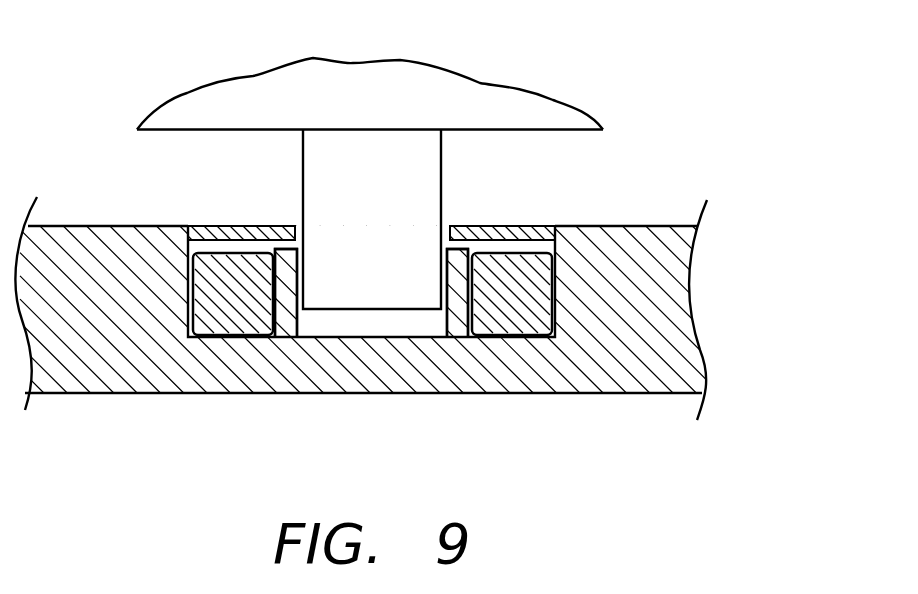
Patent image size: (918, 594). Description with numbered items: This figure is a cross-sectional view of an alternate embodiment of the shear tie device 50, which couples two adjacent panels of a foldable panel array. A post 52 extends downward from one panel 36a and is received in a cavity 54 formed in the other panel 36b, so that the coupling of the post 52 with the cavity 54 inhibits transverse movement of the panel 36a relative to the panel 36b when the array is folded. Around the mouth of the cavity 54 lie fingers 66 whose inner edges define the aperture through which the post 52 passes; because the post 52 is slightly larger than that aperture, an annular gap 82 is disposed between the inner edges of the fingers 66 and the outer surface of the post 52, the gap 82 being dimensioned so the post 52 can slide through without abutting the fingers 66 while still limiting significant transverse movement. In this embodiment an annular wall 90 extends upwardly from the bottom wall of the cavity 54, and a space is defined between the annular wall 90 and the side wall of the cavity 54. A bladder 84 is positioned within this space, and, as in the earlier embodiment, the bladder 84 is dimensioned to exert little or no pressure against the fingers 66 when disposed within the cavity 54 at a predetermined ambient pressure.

The panel 36a is at (377, 90).
The panel 36b is at (625, 275).
The shear tie device 50 is at (455, 155).
The post 52 is at (443, 143).
The cavity 54 is at (354, 322).
The fingers 66 is at (513, 227).
The annular gap 82 is at (297, 218).
The bladder 84 is at (510, 320).
The annular wall 90 is at (250, 227).